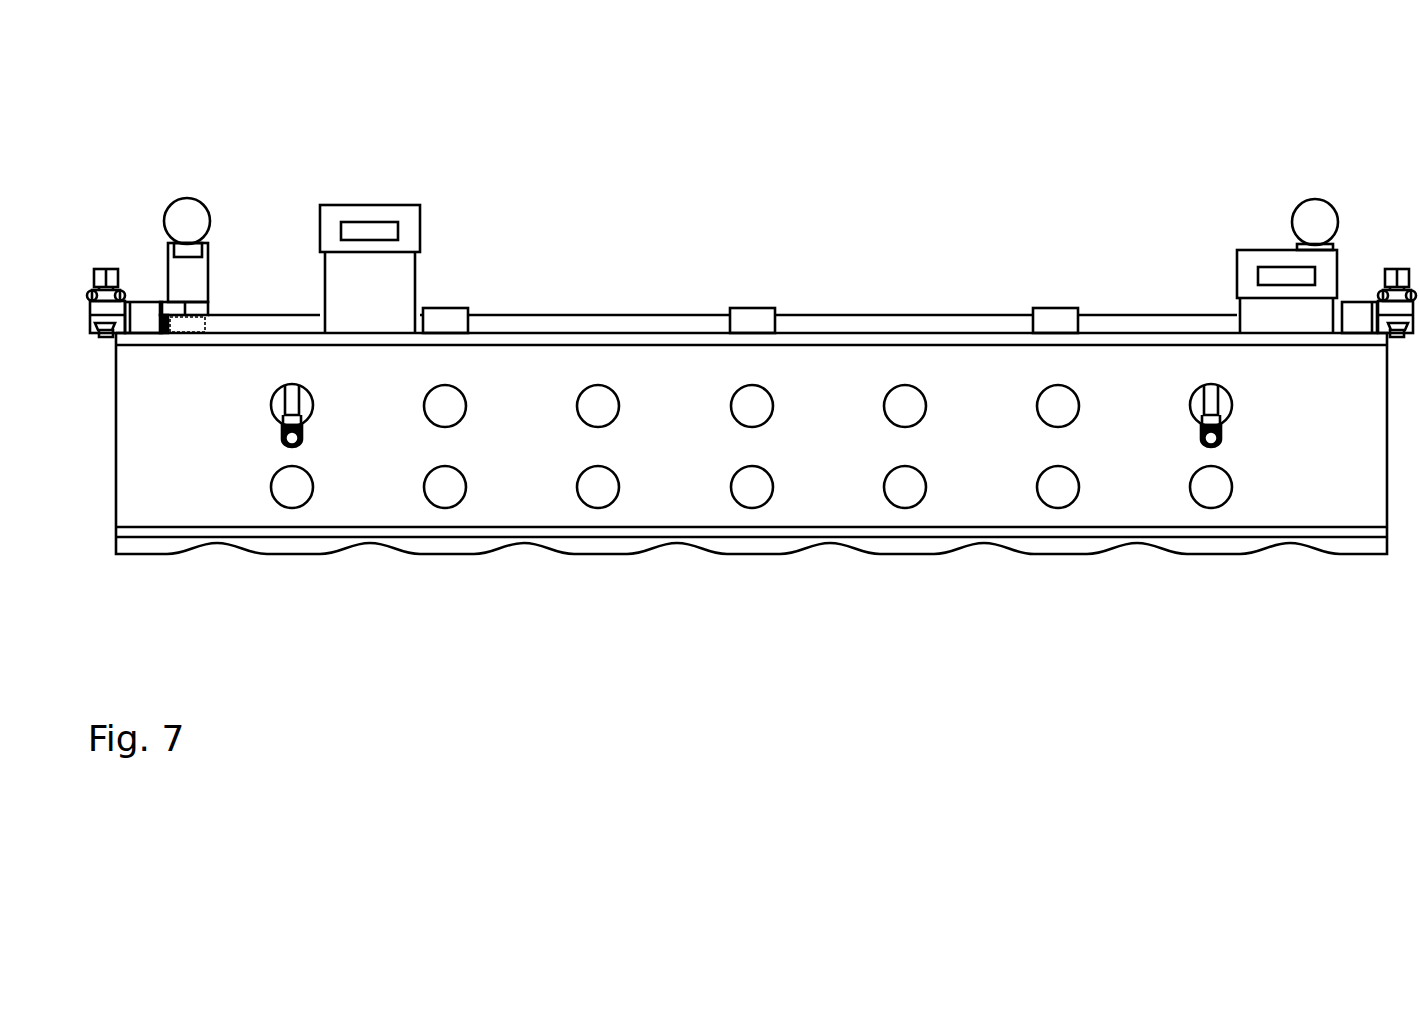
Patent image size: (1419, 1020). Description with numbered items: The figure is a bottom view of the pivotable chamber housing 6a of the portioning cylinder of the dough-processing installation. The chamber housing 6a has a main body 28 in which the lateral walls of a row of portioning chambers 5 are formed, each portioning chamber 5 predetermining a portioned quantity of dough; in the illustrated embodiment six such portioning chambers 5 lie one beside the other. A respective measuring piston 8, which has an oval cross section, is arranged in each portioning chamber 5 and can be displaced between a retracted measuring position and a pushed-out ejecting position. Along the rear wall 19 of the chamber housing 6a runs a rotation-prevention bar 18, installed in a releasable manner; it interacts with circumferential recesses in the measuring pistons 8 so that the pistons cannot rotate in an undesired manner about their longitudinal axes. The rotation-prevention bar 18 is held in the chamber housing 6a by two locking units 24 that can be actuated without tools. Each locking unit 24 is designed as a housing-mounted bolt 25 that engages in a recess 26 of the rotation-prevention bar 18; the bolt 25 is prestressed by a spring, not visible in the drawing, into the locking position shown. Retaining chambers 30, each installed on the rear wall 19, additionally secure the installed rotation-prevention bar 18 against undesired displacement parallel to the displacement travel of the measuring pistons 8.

The portioning chamber 5 is at (498, 548).
The chamber housing 6a is at (757, 560).
The measuring piston 8 is at (378, 192).
The rotation-prevention bar 18 is at (900, 323).
The rear wall 19 is at (652, 332).
The locking unit 24 is at (188, 213).
The housing-mounted bolt 25 is at (200, 325).
The recess 26 is at (176, 325).
The main body 28 is at (1007, 500).
The retaining chamber 30 is at (455, 318).